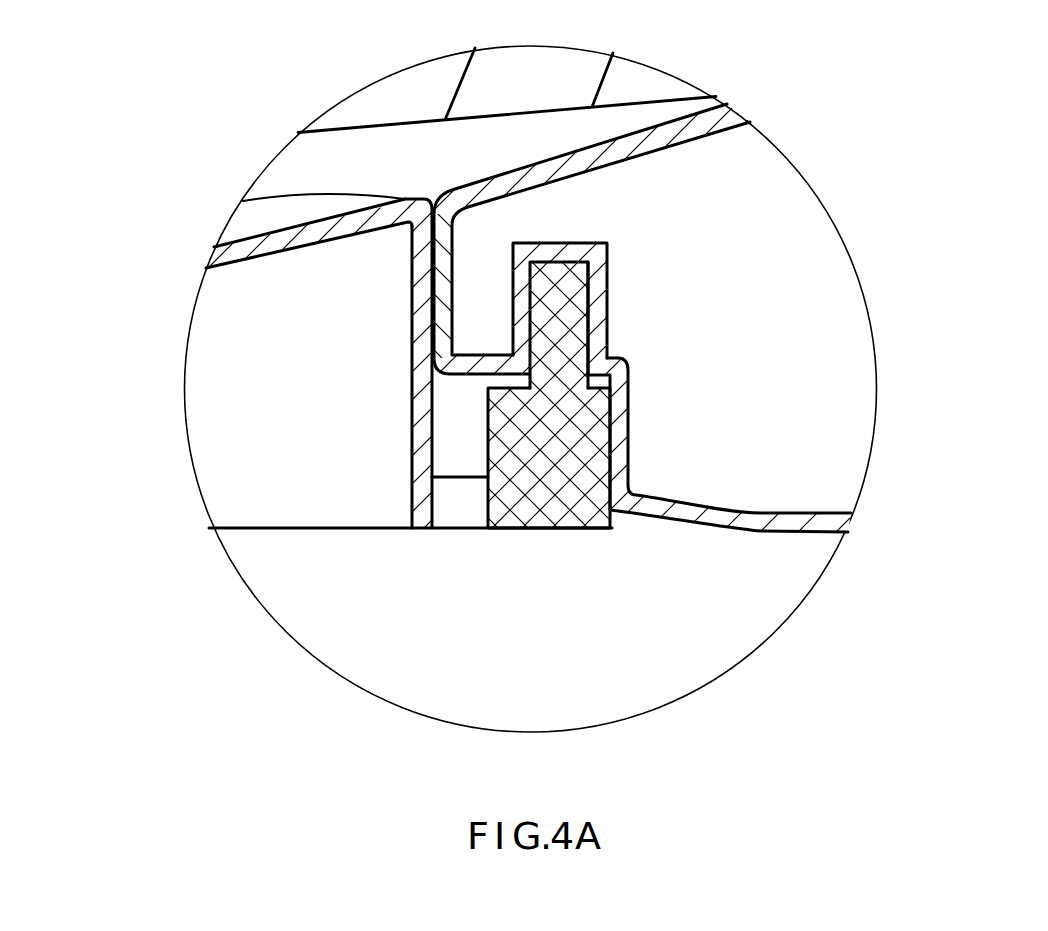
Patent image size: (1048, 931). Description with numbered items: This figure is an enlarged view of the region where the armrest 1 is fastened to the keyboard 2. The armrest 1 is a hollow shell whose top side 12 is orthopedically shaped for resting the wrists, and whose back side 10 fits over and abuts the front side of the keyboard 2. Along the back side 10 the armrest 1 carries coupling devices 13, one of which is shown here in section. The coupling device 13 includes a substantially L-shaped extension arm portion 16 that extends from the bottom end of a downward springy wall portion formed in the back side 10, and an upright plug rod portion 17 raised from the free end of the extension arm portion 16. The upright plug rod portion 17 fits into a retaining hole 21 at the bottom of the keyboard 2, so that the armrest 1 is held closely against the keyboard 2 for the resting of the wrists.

The armrest 1 is at (362, 367).
The keyboard 2 is at (724, 318).
The back side 10 is at (423, 490).
The top side 12 is at (290, 212).
The coupling device 13 is at (627, 440).
The L-shaped extension arm portion 16 is at (460, 435).
The upright plug rod portion 17 is at (560, 288).
The retaining hole 21 is at (587, 333).